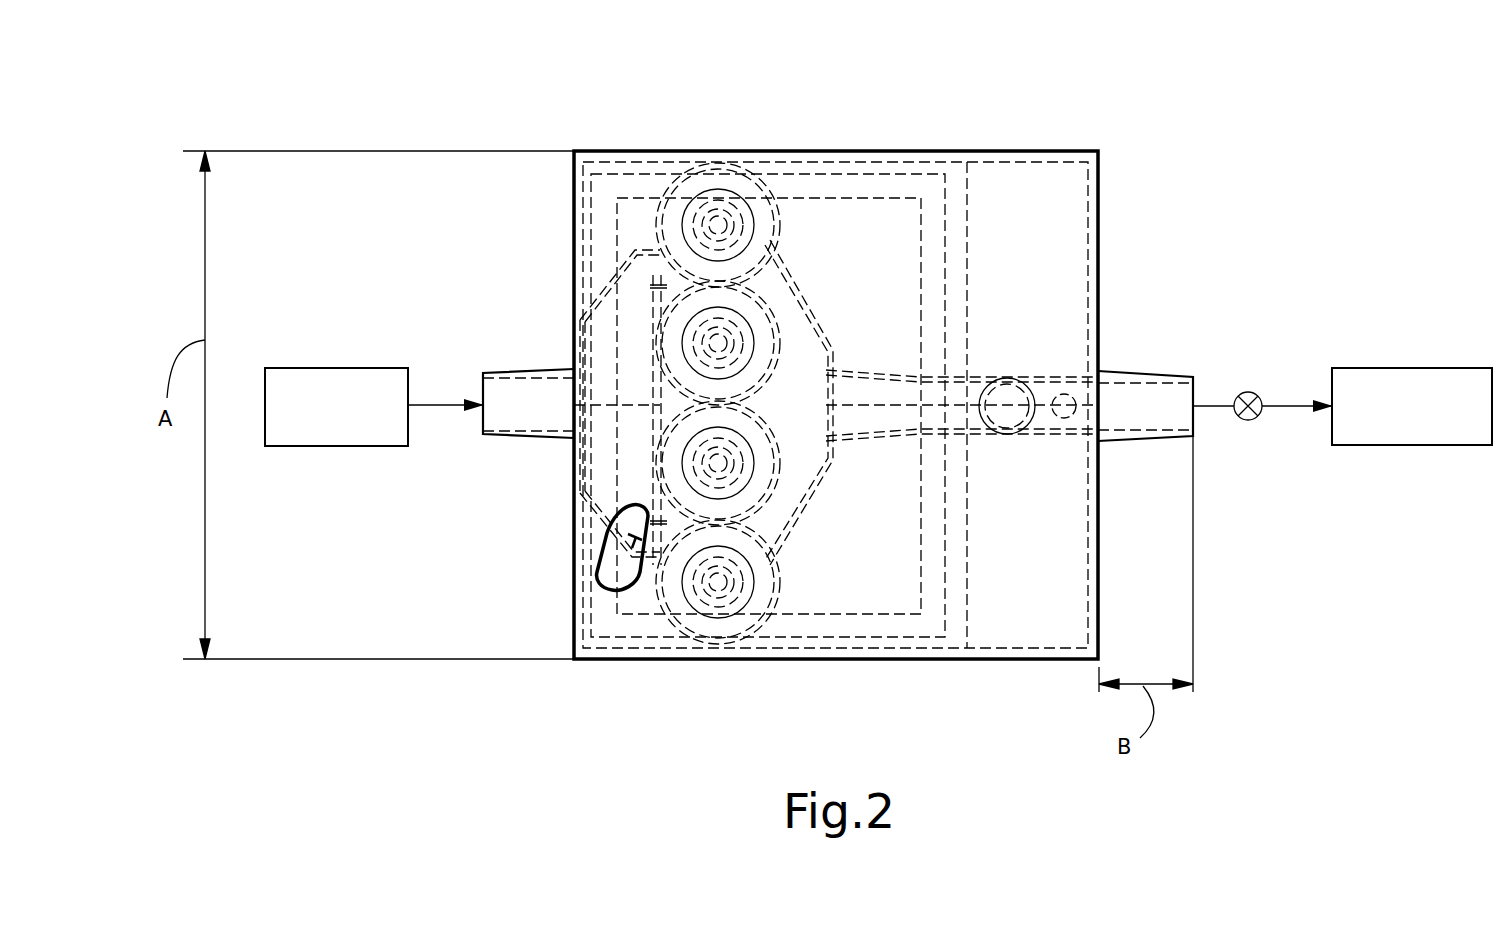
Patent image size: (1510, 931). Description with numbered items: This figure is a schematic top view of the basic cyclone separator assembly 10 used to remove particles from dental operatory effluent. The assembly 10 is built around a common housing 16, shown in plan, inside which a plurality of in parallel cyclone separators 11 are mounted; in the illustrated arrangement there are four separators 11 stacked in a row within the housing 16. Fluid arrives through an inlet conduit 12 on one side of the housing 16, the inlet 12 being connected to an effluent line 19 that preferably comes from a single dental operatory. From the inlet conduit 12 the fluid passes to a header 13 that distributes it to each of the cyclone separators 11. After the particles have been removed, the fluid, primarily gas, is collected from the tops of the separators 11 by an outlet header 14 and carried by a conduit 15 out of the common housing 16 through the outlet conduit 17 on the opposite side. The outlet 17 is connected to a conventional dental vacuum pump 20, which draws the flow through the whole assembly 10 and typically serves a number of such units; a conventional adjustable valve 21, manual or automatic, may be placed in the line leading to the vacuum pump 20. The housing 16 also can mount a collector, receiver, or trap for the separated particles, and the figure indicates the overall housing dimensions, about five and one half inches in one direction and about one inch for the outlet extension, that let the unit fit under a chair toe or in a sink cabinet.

The assembly 10 is at (957, 116).
The cyclone separators 11 is at (752, 354).
The inlet conduit 12 is at (505, 371).
The header 13 is at (632, 537).
The outlet header 14 is at (800, 472).
The conduit 15 is at (992, 364).
The common housing 16 is at (877, 657).
The outlet conduit 17 is at (1130, 441).
The effluent line 19 is at (351, 367).
The dental vacuum pump 20 is at (1400, 446).
The adjustable valve 21 is at (1250, 421).